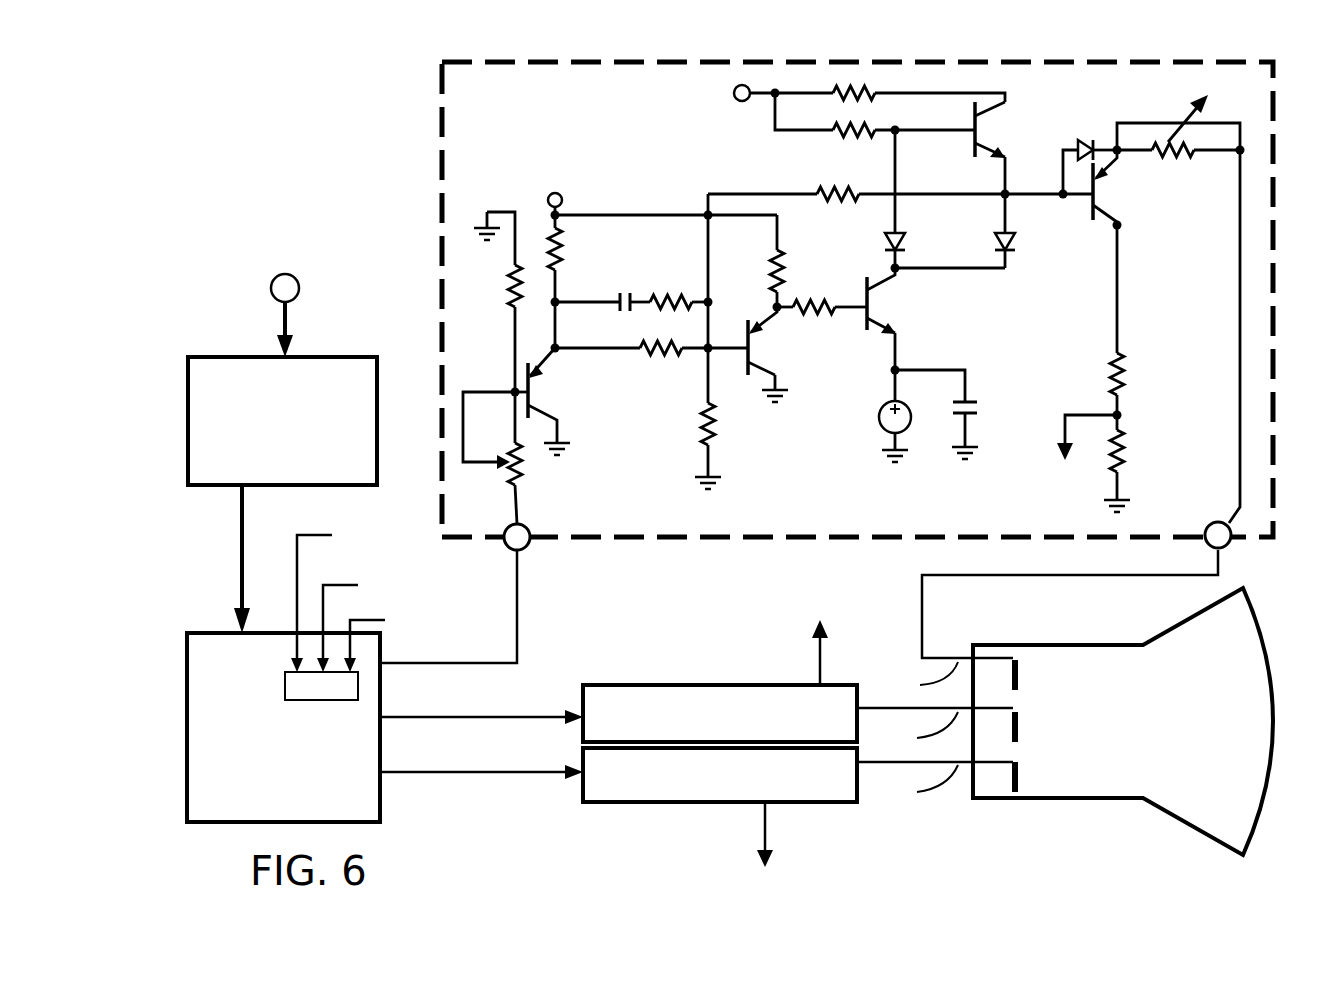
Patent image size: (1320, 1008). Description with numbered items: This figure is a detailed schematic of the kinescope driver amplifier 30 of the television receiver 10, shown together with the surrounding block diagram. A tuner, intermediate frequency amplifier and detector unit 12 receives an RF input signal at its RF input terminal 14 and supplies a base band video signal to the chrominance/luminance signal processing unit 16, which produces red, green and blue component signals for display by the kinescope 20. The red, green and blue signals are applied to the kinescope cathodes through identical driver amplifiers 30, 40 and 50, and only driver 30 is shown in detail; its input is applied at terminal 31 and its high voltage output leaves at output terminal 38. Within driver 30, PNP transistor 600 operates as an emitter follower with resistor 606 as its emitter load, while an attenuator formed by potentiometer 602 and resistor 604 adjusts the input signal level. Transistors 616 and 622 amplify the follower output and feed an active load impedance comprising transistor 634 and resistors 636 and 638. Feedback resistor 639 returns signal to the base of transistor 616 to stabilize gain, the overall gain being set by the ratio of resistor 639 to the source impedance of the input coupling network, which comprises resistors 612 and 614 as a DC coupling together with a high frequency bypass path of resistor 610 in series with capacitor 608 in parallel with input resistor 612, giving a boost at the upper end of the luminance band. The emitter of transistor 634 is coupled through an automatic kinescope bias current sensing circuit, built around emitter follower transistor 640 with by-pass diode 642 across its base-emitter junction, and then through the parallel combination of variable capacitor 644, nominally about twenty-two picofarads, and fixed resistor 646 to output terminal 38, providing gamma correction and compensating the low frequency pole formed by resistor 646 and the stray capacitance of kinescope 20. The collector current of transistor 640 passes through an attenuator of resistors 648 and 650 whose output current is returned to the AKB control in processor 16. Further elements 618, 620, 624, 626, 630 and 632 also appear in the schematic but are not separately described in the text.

The television receiver 10 is at (262, 132).
The tuner, intermediate frequency amplifier and detector unit 12 is at (247, 357).
The RF input terminal 14 is at (278, 274).
The chrominance/luminance signal processing unit 16 is at (225, 620).
The kinescope 20 is at (1117, 803).
The kinescope driver amplifier 30 is at (820, 543).
The red drive input terminal 31 is at (525, 523).
The output terminal 38 is at (1210, 522).
The kinescope driver amplifier 40 is at (690, 683).
The kinescope driver amplifier 50 is at (693, 807).
The PNP transistor 600 is at (545, 401).
The potentiometer 602 is at (505, 455).
The resistor 604 is at (505, 290).
The resistor 606 is at (567, 235).
The capacitor 608 is at (622, 313).
The resistor 610 is at (687, 310).
The input resistor 612 is at (642, 365).
The resistor 614 is at (698, 423).
The transistor 616 is at (771, 354).
The 680 ohm resistor 618 is at (765, 273).
The 82 ohm resistor 620 is at (803, 318).
The transistor 622 is at (887, 301).
The reference voltage source Vref 624 is at (880, 430).
The 100nF capacitor 626 is at (1003, 400).
The diode 630 is at (906, 240).
The diode 632 is at (992, 240).
The transistor 634 is at (996, 130).
The resistor 636 is at (868, 83).
The resistor 638 is at (862, 116).
The feedback resistor 639 is at (845, 180).
The emitter follower transistor 640 is at (1115, 186).
The by-pass diode 642 is at (1088, 140).
The variable capacitor 644 is at (1186, 100).
The fixed resistor 646 is at (1160, 160).
The resistor 648 is at (1128, 372).
The resistor 650 is at (1155, 425).